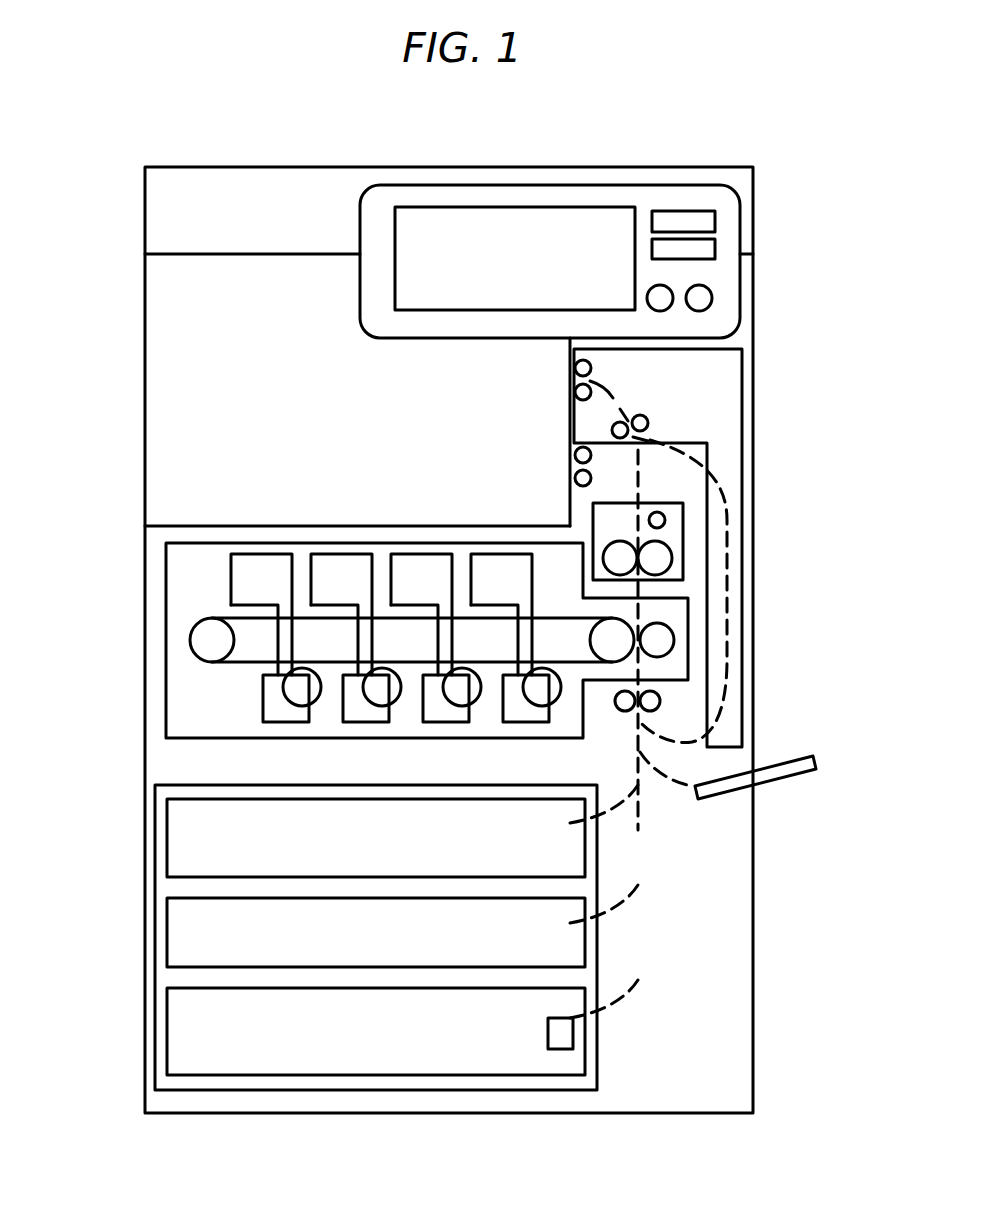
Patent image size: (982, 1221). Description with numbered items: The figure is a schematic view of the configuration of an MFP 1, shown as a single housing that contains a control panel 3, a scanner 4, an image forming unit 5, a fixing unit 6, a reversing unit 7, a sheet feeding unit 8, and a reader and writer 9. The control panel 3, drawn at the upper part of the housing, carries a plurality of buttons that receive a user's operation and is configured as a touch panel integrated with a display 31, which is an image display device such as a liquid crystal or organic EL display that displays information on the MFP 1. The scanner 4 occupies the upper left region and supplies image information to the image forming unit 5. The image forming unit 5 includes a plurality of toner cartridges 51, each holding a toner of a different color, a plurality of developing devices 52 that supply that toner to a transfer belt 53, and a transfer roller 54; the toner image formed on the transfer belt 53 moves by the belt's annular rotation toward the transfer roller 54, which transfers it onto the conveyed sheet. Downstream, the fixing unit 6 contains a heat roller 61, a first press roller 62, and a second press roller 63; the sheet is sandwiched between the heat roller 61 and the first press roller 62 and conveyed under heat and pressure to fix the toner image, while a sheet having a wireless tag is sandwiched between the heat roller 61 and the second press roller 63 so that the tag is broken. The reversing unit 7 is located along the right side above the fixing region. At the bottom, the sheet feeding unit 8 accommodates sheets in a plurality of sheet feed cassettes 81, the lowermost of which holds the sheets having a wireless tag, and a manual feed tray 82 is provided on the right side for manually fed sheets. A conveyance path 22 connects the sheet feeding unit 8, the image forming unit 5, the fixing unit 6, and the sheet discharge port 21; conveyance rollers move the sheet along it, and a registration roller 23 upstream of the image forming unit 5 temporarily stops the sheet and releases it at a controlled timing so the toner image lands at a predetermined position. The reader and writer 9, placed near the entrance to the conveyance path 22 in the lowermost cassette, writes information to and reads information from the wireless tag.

The MFP 1 is at (795, 164).
The control panel 3 is at (740, 225).
The display 31 is at (548, 225).
The scanner 4 is at (165, 205).
The image forming unit 5 is at (165, 568).
The toner cartridge 51 is at (263, 570).
The developing device 52 is at (276, 704).
The transfer belt 53 is at (468, 610).
The transfer roller 54 is at (678, 640).
The fixing unit 6 is at (700, 568).
The heat roller 61 is at (608, 555).
The first press roller 62 is at (684, 552).
The second press roller 63 is at (683, 517).
The reversing unit 7 is at (740, 395).
The sheet feeding unit 8 is at (158, 786).
The sheet feed cassette 81 is at (170, 842).
The manual feed tray 82 is at (793, 756).
The reader and writer 9 is at (563, 1040).
The sheet discharge port 21 is at (545, 466).
The conveyance path 22 is at (692, 870).
The registration roller 23 is at (662, 700).